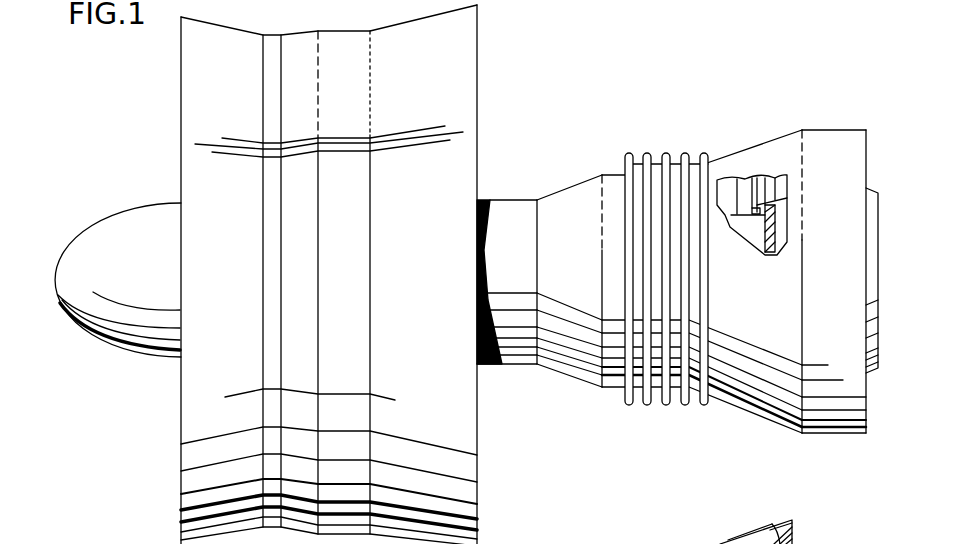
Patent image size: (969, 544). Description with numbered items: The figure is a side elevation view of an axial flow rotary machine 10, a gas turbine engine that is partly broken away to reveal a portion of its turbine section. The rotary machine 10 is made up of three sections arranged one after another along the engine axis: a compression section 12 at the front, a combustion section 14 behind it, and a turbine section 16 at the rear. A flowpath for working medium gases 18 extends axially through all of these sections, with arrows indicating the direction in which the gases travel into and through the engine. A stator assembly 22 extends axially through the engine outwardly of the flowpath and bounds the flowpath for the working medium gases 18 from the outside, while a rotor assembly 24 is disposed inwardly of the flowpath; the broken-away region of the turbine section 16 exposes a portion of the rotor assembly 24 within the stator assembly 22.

The axial flow rotary machine 10 is at (550, 132).
The compression section 12 is at (407, 20).
The combustion section 14 is at (555, 192).
The turbine section 16 is at (693, 163).
The working medium gases 18 is at (162, 173).
The stator assembly 22 is at (780, 133).
The rotor assembly 24 is at (786, 217).